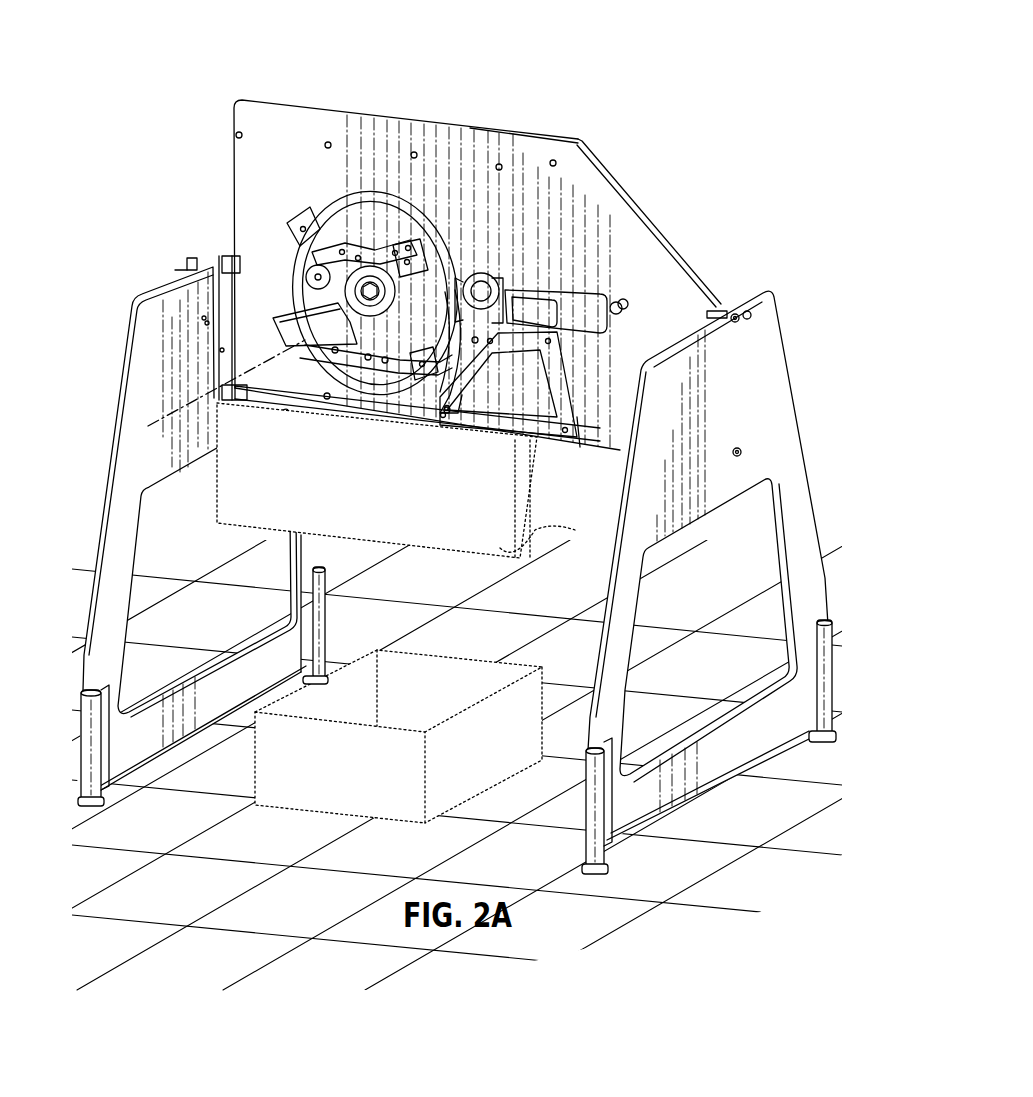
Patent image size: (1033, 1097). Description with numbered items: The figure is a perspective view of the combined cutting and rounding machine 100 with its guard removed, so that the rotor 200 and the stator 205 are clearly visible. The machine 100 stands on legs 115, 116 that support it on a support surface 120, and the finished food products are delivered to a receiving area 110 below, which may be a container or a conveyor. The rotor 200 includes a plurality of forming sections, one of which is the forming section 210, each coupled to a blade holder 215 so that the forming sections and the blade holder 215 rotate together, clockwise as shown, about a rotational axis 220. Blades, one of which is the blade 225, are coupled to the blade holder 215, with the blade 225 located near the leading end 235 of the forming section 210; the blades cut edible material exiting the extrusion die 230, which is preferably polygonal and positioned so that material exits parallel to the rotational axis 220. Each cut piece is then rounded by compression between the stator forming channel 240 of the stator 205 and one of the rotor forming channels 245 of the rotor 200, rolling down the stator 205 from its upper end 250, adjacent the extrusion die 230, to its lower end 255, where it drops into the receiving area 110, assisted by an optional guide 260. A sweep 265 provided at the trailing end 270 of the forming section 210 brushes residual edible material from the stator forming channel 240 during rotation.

The combined cutting and rounding machine 100 is at (688, 105).
The receiving area 110 is at (420, 716).
The leg 115 is at (762, 338).
The leg 116 is at (163, 312).
The support surface 120 is at (300, 872).
The rotor 200 is at (281, 302).
The stator 205 is at (455, 408).
The forming section 210 is at (368, 205).
The blade holder 215 is at (314, 270).
The rotational axis 220 is at (287, 393).
The blade 225 is at (457, 248).
The extrusion die 230 is at (470, 313).
The leading end 235 is at (490, 288).
The stator forming channel 240 is at (450, 370).
The rotor forming channel 245 is at (453, 190).
The upper end 250 is at (548, 290).
The lower end 255 is at (417, 395).
The guide 260 is at (552, 498).
The sweep 265 is at (303, 208).
The trailing end 270 is at (328, 203).